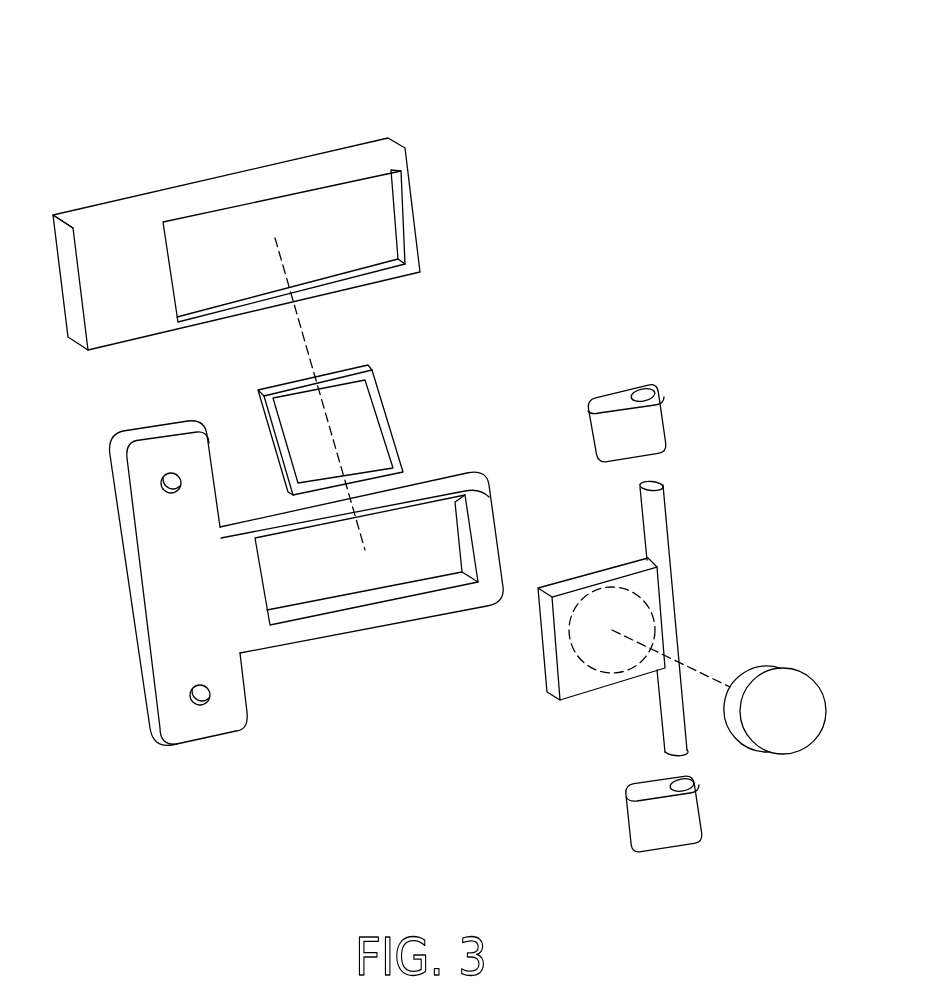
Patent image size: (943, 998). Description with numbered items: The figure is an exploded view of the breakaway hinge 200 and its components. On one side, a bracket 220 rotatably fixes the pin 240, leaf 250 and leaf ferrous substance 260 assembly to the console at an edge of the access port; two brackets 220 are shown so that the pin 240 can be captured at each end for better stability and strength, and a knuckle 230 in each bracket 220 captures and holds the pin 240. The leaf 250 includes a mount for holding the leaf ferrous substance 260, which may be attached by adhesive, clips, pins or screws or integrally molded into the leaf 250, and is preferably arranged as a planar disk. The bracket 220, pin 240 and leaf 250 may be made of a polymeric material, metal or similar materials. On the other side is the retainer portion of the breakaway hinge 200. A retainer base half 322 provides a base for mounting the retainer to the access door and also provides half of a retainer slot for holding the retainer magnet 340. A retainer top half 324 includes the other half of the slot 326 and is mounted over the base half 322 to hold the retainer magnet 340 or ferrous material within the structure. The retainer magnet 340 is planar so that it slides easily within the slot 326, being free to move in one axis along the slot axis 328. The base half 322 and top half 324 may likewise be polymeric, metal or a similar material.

The breakaway hinge 200 is at (120, 80).
The bracket 220 is at (657, 440).
The knuckle 230 is at (630, 387).
The pin 240 is at (655, 510).
The leaf 250 is at (570, 663).
The leaf ferrous substance 260 is at (760, 697).
The retainer base half 322 is at (335, 152).
The retainer top half 324 is at (172, 558).
The slot 326 is at (388, 527).
The slot axis 328 is at (447, 558).
The retainer magnet 340 is at (328, 412).